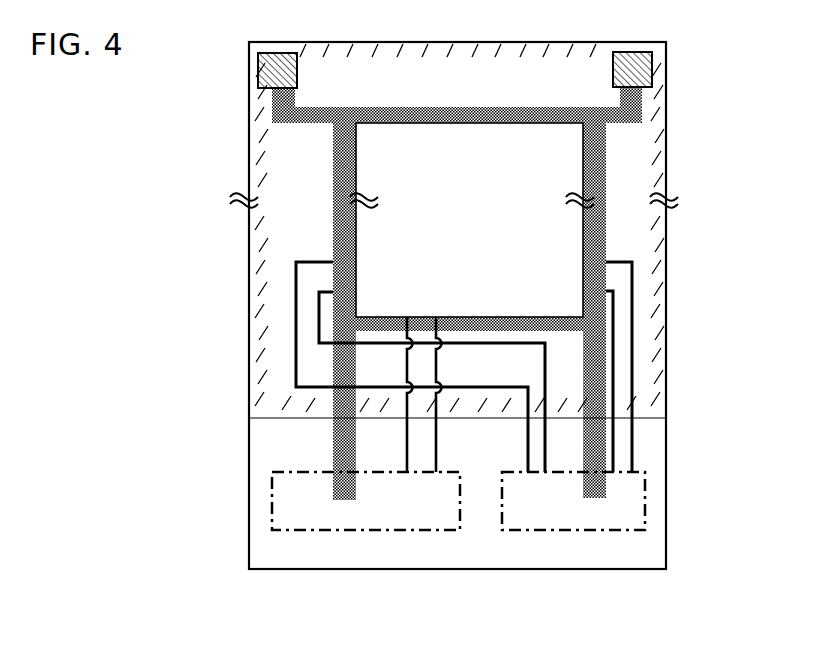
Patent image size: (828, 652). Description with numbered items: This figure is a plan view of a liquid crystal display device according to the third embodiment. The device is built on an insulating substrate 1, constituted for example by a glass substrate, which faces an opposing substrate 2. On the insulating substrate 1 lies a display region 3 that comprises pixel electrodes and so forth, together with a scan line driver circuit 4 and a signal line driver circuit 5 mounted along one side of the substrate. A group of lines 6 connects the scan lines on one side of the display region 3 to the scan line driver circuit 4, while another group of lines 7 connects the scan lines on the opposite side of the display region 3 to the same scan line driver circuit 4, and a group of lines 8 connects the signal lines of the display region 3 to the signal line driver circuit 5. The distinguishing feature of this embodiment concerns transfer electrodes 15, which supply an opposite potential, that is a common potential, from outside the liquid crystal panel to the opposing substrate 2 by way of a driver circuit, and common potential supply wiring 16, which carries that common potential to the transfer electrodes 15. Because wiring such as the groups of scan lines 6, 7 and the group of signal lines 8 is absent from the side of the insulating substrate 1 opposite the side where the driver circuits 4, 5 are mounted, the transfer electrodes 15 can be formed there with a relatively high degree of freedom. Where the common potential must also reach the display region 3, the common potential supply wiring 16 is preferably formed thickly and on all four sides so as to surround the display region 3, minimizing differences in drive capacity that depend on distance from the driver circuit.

The insulating substrate 1 is at (667, 433).
The opposing substrate 2 is at (648, 258).
The display region 3 is at (562, 172).
The scan line driver circuit 4 is at (627, 507).
The signal line driver circuit 5 is at (290, 499).
The group of lines 6 is at (315, 353).
The group of lines 7 is at (623, 338).
The group of lines 8 is at (423, 447).
The transfer electrodes 15 is at (613, 53).
The common potential supply wiring 16 is at (338, 157).